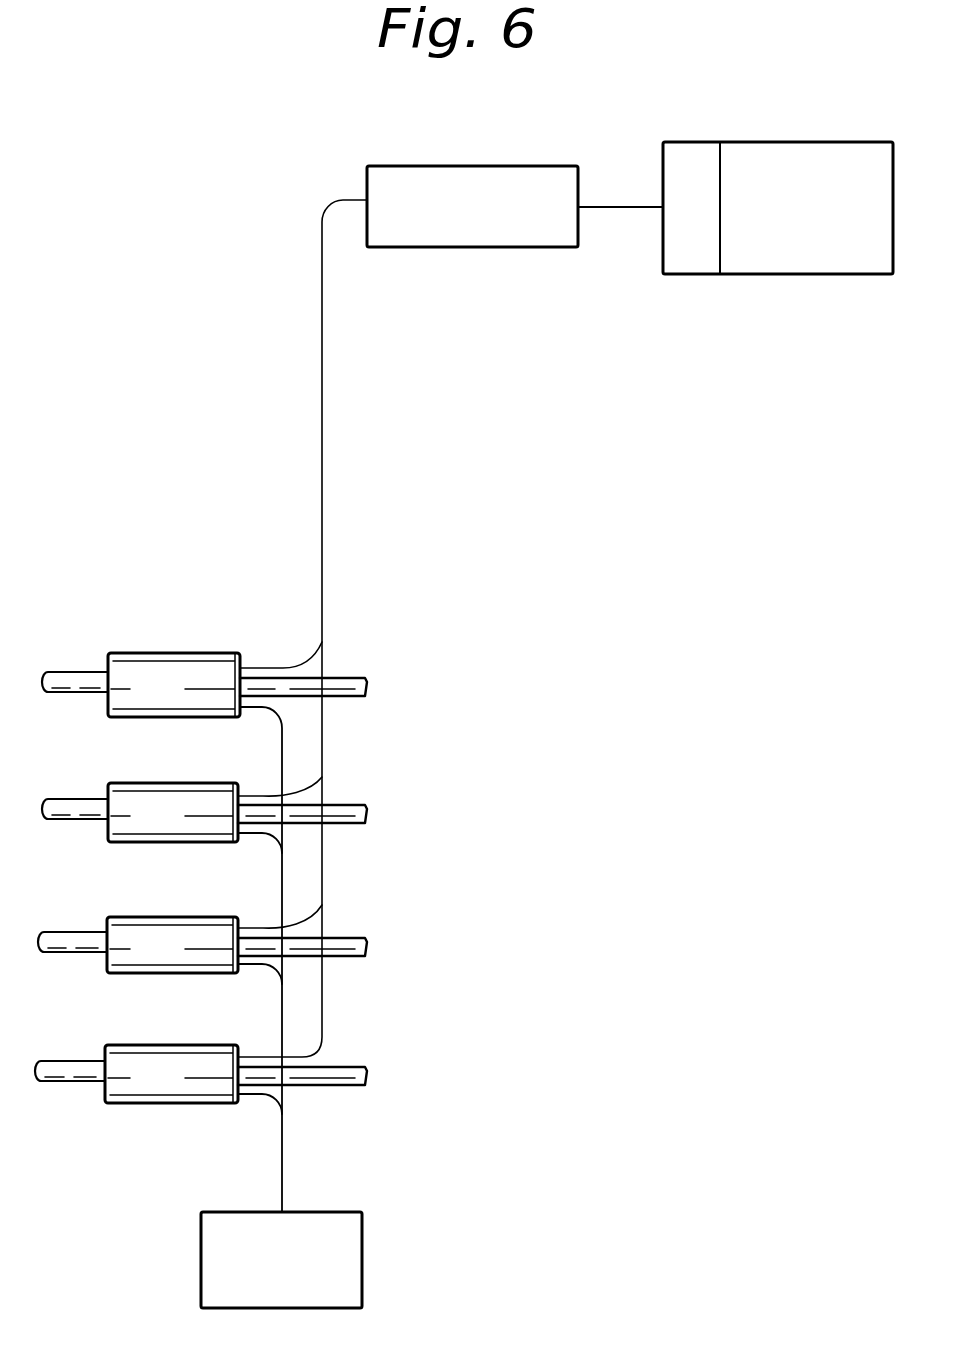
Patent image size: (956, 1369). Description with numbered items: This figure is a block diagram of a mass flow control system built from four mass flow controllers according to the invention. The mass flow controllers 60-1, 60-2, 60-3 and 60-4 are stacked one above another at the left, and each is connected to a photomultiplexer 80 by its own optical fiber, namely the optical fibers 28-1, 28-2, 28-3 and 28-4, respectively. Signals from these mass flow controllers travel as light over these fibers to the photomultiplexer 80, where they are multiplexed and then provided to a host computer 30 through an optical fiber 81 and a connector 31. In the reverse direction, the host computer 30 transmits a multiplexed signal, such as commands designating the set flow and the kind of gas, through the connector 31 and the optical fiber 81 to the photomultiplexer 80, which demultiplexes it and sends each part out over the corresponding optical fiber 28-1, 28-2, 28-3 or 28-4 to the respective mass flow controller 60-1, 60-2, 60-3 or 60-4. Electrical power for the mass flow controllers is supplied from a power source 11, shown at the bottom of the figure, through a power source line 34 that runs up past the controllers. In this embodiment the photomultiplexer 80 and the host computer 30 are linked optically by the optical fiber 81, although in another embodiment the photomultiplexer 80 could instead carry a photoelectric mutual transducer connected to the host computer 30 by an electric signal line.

The photomultiplexer 80 is at (485, 166).
The optical fiber 81 is at (608, 207).
The host computer 30 is at (815, 142).
The connector 31 is at (688, 142).
The mass flow controller 60-1 is at (172, 653).
The mass flow controller 60-2 is at (172, 783).
The mass flow controller 60-3 is at (172, 917).
The mass flow controller 60-4 is at (172, 1045).
The optical fiber 28-1 is at (283, 667).
The optical fiber 28-2 is at (263, 795).
The optical fiber 28-3 is at (263, 927).
The optical fiber 28-4 is at (322, 1034).
The power source line 34 is at (283, 1156).
The power source 11 is at (362, 1243).